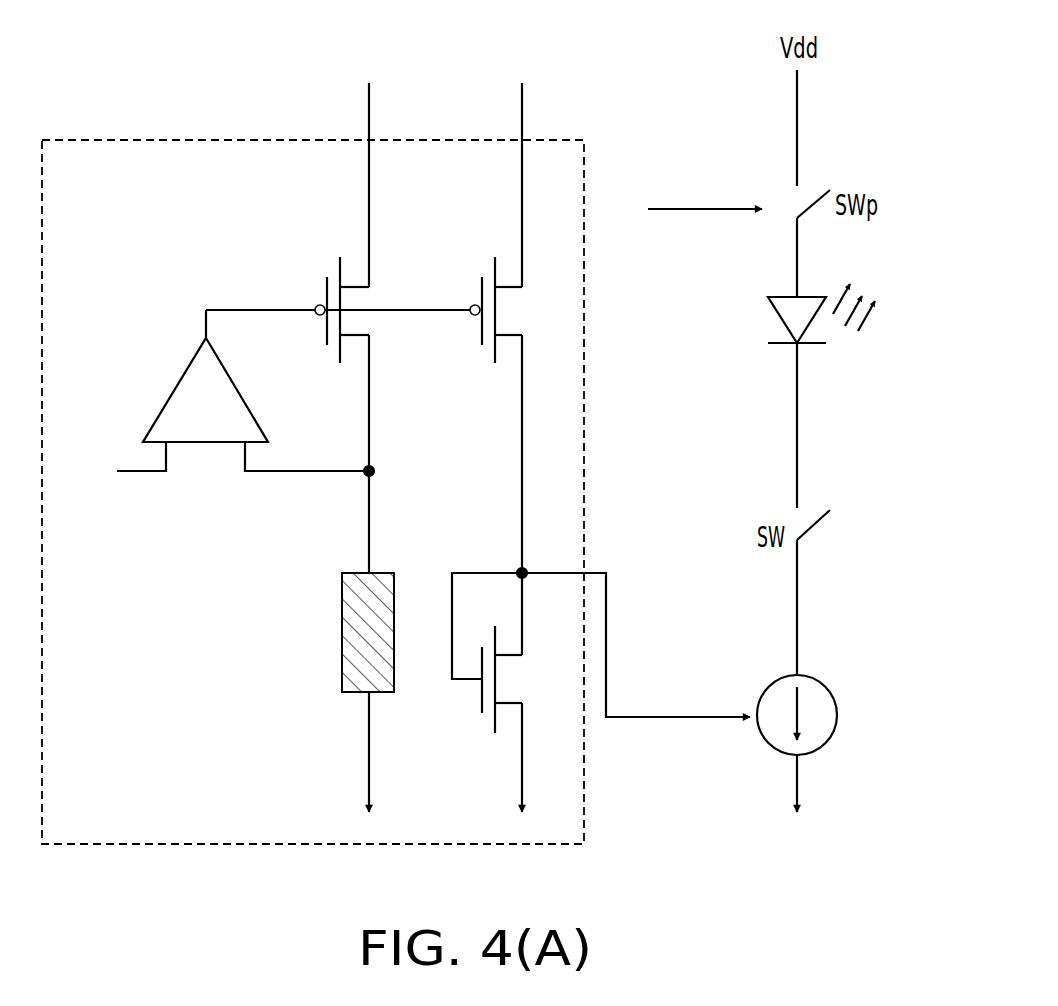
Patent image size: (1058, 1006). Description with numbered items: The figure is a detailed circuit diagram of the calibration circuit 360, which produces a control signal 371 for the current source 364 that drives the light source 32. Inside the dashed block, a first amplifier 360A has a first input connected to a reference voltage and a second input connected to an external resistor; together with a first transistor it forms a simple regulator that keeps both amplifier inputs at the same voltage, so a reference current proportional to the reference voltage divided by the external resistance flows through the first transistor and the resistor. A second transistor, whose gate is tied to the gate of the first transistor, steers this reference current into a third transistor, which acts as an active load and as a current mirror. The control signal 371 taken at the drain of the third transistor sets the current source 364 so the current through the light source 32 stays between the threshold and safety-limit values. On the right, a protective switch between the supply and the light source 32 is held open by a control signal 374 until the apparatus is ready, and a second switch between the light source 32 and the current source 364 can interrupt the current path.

The calibration circuit 360 is at (218, 140).
The first amplifier 360A is at (176, 388).
The control signal 371 is at (680, 718).
The control signal 374 is at (707, 209).
The light source 32 is at (777, 320).
The current source 364 is at (840, 717).